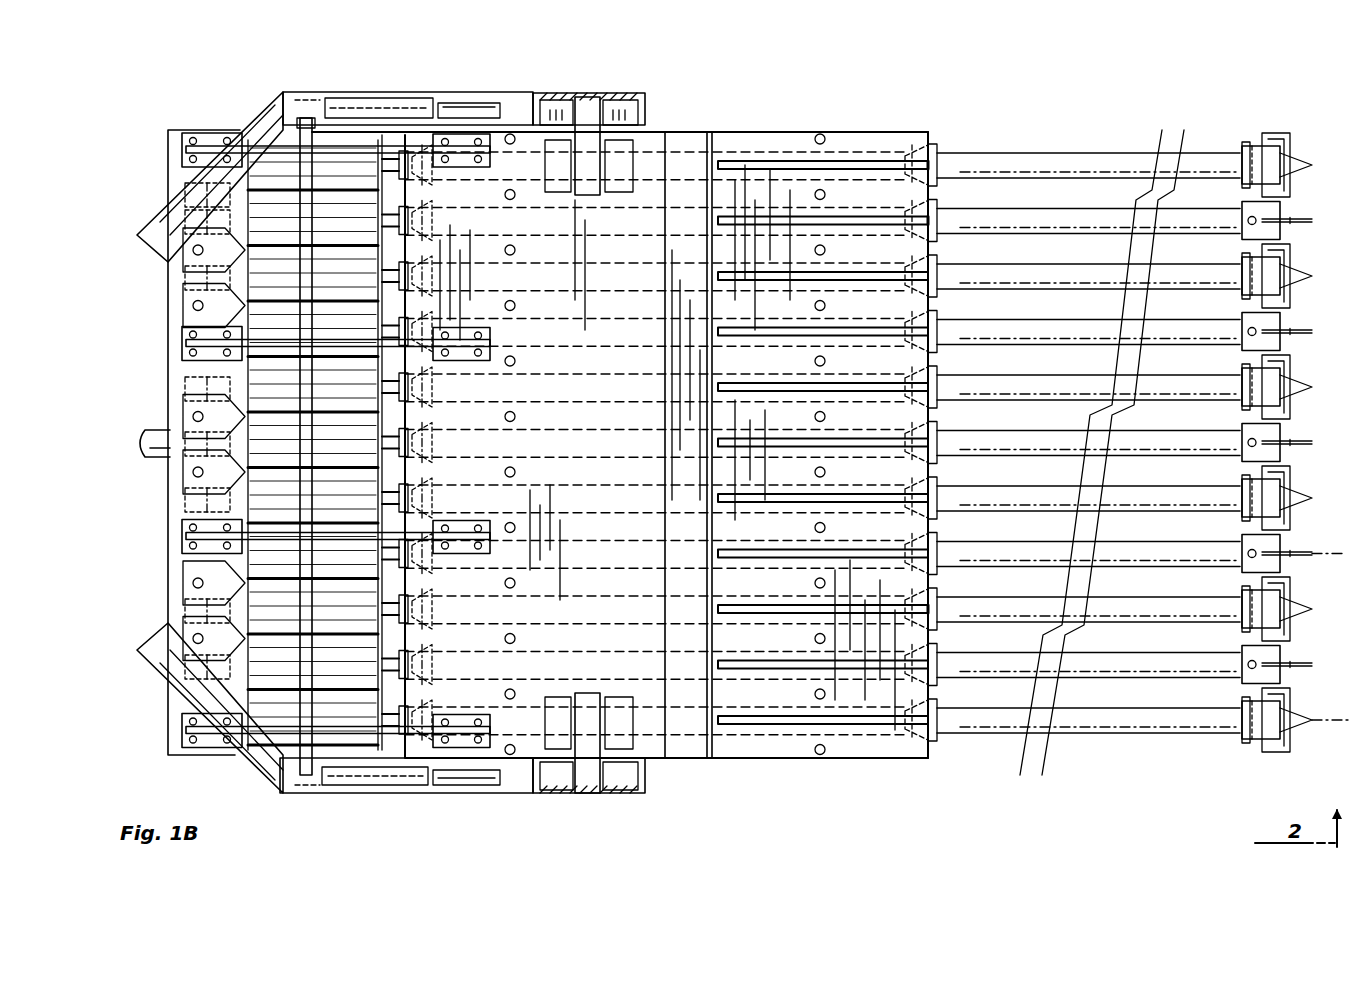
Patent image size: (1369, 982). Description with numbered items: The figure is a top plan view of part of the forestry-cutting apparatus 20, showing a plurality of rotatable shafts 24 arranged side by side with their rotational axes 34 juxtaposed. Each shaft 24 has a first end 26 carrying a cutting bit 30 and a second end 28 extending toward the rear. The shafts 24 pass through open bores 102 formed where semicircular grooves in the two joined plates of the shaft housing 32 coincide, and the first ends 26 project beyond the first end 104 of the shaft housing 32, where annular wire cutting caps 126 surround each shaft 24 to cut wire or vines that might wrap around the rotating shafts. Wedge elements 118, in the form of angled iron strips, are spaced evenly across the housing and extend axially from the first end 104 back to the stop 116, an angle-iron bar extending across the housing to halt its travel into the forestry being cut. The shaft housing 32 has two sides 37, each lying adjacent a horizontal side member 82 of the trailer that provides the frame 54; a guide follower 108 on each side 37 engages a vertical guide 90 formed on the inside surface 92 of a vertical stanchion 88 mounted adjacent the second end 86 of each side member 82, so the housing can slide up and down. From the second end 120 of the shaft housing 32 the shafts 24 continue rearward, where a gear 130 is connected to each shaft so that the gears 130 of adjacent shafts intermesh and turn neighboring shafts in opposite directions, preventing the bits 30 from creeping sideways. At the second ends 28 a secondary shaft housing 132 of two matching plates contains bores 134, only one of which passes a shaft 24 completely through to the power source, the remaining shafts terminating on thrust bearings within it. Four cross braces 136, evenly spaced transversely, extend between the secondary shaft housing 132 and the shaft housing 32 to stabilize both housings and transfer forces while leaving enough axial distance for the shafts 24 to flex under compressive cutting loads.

The apparatus 20 is at (920, 125).
The rotatable shafts 24 is at (1085, 270).
The first end 26 is at (1240, 280).
The second end 28 is at (185, 322).
The cutting bits 30 is at (1302, 208).
The shaft housing 32 is at (868, 128).
The rotational axes 34 is at (1180, 555).
The sides 37 is at (835, 128).
The frame 54 is at (245, 108).
The horizontal side members 82 is at (285, 92).
The second ends 86 is at (645, 98).
The vertical stanchion 88 is at (548, 100).
The vertical guide 90 is at (582, 97).
The inside surface 92 is at (615, 100).
The bores 102 is at (805, 160).
The first end of shaft housing 104 is at (935, 142).
The guide follower 108 is at (610, 128).
The stop 116 is at (712, 748).
The wedge elements 118 is at (905, 203).
The second end of shaft housing 120 is at (360, 97).
The wire cutting caps 126 is at (930, 290).
The gears 130 is at (200, 215).
The secondary shaft housing 132 is at (180, 140).
The bore 134 is at (150, 430).
The cross braces 136 is at (500, 340).